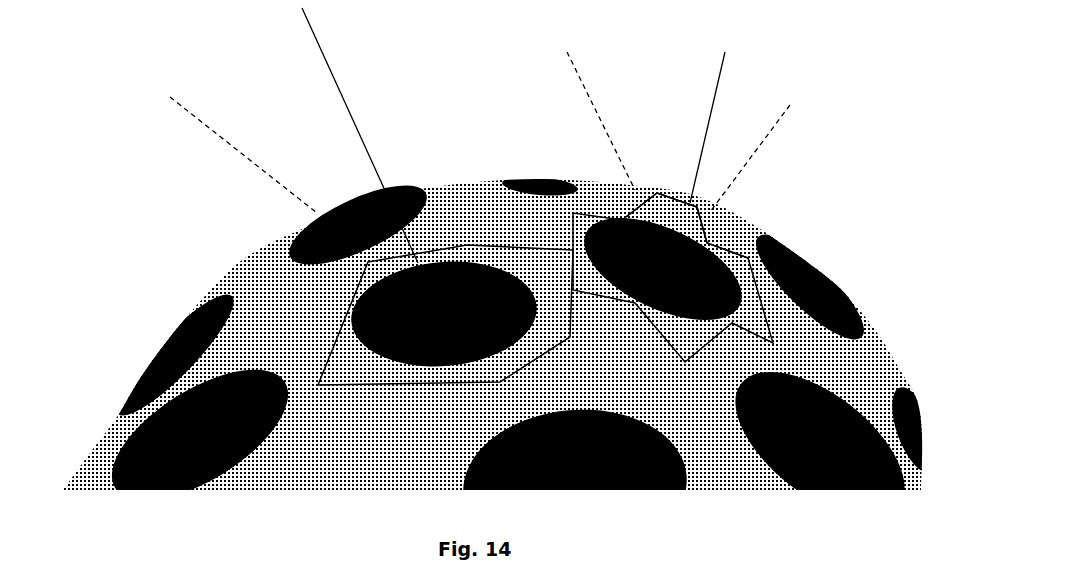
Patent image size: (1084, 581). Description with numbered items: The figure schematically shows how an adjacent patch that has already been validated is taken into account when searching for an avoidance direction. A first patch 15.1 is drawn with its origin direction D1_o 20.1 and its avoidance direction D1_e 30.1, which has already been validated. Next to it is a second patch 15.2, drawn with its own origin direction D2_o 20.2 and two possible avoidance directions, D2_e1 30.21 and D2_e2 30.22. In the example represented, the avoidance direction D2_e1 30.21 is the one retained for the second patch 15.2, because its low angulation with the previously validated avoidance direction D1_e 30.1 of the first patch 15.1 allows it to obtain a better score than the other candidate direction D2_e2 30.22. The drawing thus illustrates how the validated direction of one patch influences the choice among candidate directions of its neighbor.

The patch 15.1 is at (340, 363).
The patch 15.2 is at (797, 327).
The origin direction D1_o 20.1 is at (315, 66).
The origin direction D2_o 20.2 is at (750, 51).
The avoidance direction D1_e 30.1 is at (232, 161).
The avoidance direction D2_e1 30.21 is at (590, 50).
The avoidance direction D2_e2 30.22 is at (790, 148).